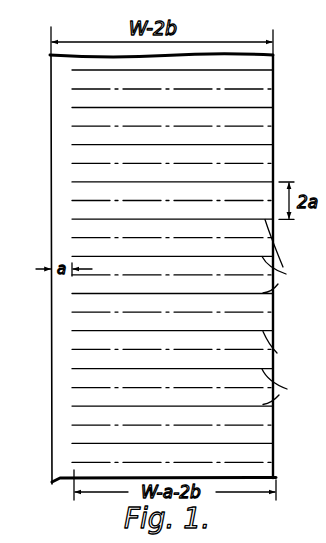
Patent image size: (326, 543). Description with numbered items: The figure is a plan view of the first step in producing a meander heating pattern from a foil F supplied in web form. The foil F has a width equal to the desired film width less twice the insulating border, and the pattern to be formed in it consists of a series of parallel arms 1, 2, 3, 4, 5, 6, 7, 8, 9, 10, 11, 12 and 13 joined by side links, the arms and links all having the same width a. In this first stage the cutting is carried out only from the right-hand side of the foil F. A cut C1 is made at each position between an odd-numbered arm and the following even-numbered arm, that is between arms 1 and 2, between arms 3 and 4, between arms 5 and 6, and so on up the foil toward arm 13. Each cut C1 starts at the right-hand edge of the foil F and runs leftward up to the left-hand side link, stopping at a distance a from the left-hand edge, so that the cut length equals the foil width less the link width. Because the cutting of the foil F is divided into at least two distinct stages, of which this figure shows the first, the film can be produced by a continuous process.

The arm 1 is at (172, 340).
The arm 2 is at (172, 321).
The arm 3 is at (172, 302).
The arm 4 is at (172, 284).
The arm 5 is at (172, 265).
The arm 6 is at (172, 247).
The arm 7 is at (172, 228).
The arm 8 is at (172, 209).
The arm 9 is at (172, 191).
The arm 10 is at (172, 172).
The arm 11 is at (172, 154).
The arm 12 is at (172, 135).
The arm 13 is at (172, 116).
The foil F is at (60, 114).
The cut C1 is at (285, 312).